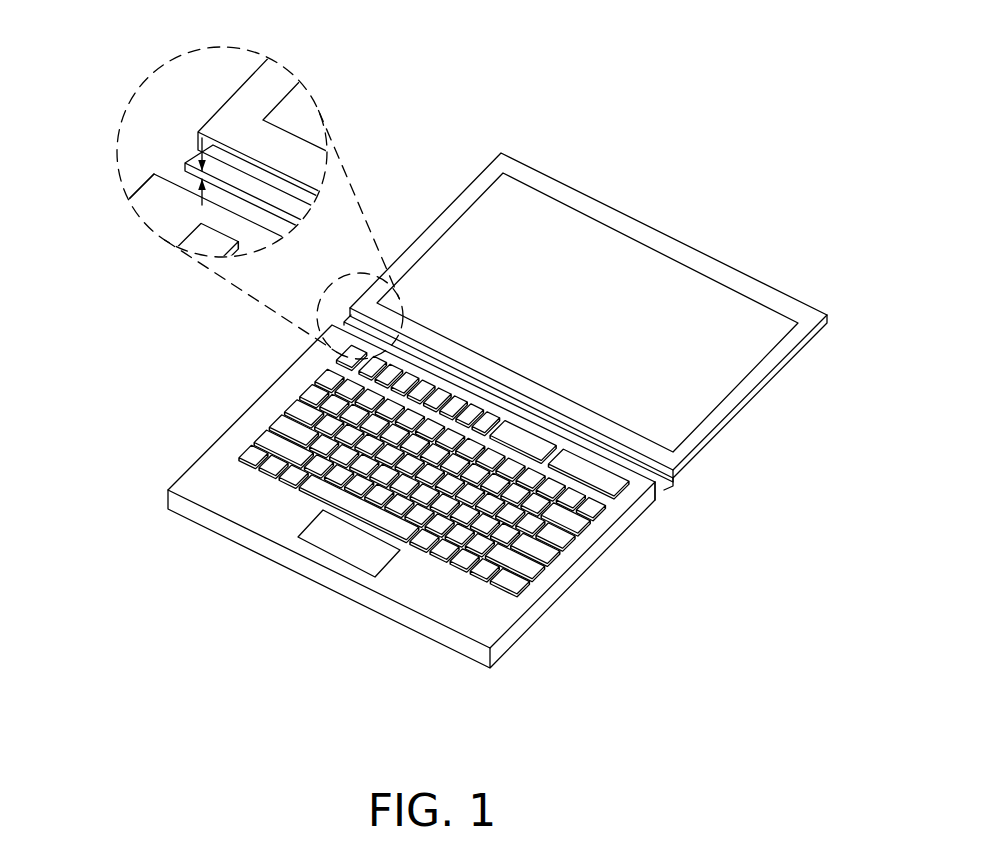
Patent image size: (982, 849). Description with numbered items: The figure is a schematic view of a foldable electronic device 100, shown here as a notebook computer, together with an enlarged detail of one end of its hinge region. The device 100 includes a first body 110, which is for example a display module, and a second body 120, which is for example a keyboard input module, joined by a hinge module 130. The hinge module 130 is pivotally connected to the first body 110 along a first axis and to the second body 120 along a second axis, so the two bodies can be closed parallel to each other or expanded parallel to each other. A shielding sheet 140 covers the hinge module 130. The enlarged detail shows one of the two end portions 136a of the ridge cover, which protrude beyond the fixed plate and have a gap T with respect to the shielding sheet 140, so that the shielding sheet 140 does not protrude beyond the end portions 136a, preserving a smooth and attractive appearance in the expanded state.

The foldable electronic device 100 is at (444, 334).
The first body 110 is at (280, 80).
The second body 120 is at (165, 212).
The hinge module 130 is at (160, 167).
The end portions of the ridge cover 136a is at (152, 175).
The shielding sheet 140 is at (287, 217).
The gap T is at (192, 163).